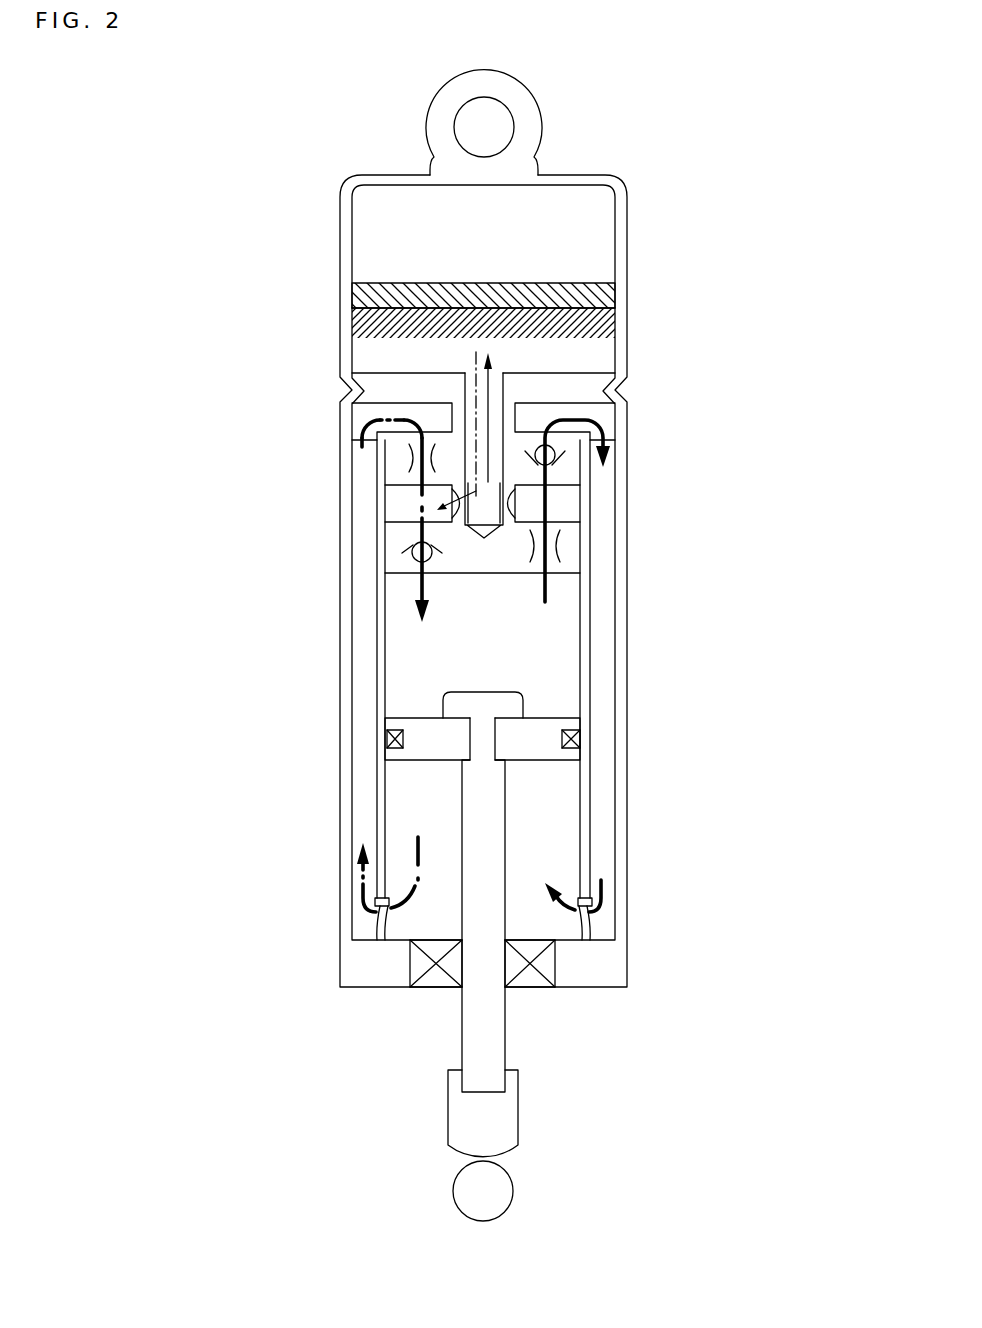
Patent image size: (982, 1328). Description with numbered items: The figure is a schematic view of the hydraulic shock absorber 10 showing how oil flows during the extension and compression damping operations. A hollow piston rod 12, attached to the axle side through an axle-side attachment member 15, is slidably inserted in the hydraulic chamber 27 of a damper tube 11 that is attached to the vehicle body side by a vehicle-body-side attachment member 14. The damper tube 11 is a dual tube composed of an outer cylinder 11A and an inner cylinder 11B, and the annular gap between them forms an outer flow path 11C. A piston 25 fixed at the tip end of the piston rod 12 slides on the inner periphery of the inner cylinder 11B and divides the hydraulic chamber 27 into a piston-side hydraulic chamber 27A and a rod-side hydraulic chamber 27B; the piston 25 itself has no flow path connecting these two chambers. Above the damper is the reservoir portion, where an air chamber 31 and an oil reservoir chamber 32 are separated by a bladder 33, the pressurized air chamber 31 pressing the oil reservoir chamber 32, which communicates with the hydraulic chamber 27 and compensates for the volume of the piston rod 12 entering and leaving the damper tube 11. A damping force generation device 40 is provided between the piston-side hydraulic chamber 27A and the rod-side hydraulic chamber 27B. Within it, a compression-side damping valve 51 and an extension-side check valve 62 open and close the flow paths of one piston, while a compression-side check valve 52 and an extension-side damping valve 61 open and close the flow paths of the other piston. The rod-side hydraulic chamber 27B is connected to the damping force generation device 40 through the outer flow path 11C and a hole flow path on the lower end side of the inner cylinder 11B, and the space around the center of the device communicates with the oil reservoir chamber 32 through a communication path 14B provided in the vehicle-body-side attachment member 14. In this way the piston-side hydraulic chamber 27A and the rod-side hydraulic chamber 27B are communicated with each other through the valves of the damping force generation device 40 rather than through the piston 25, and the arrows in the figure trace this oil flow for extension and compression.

The hydraulic shock absorber 10 is at (290, 208).
The damper tube 11 is at (441, 581).
The outer cylinder 11A is at (340, 624).
The inner cylinder 11B is at (378, 657).
The outer flow path 11C is at (358, 692).
The piston rod 12 is at (462, 1023).
The vehicle-body-side attachment member 14 is at (435, 122).
The communication path 14B is at (497, 382).
The axle-side attachment member 15 is at (432, 1192).
The piston 25 is at (538, 752).
The hydraulic chamber 27 is at (549, 756).
The piston-side hydraulic chamber 27A is at (547, 636).
The rod-side hydraulic chamber 27B is at (547, 843).
The air chamber 31 is at (577, 242).
The oil reservoir chamber 32 is at (577, 321).
The bladder 33 is at (577, 296).
The damping force generation device 40 is at (492, 483).
The compression-side damping valve 51 is at (557, 546).
The compression-side check valve 52 is at (558, 458).
The extension-side damping valve 61 is at (410, 458).
The extension-side check valve 62 is at (410, 547).